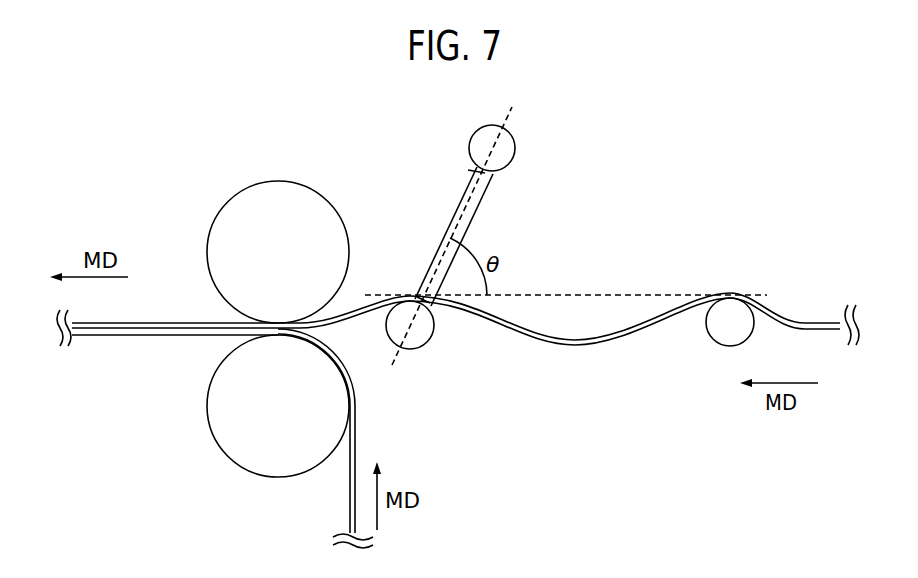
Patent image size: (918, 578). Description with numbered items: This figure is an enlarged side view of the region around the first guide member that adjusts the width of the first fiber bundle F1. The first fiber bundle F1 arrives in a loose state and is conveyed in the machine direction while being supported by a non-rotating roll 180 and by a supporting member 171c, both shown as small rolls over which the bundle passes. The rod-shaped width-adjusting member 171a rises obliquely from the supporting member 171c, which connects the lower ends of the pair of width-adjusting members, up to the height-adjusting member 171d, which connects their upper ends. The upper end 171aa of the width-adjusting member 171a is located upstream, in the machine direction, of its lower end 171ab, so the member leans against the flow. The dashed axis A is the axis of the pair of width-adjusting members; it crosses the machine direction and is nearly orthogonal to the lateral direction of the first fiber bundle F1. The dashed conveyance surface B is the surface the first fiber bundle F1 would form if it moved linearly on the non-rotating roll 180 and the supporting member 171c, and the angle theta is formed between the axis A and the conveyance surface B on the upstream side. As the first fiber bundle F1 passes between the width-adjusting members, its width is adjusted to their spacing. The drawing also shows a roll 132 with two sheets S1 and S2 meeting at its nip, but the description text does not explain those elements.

The roller 132 is at (253, 203).
The width-adjusting member 171a is at (478, 208).
The upper end of the width-adjusting member 171aa is at (458, 162).
The lower end of the width-adjusting member 171ab is at (404, 282).
The supporting member 171c is at (433, 337).
The height-adjusting member 171d is at (507, 152).
The non-rotating roll 180 is at (728, 336).
The first sheet S1 is at (350, 513).
The second sheet S2 is at (122, 337).
The first fiber bundle F1 is at (812, 323).
The axis A is at (457, 225).
The conveyance surface B is at (576, 294).